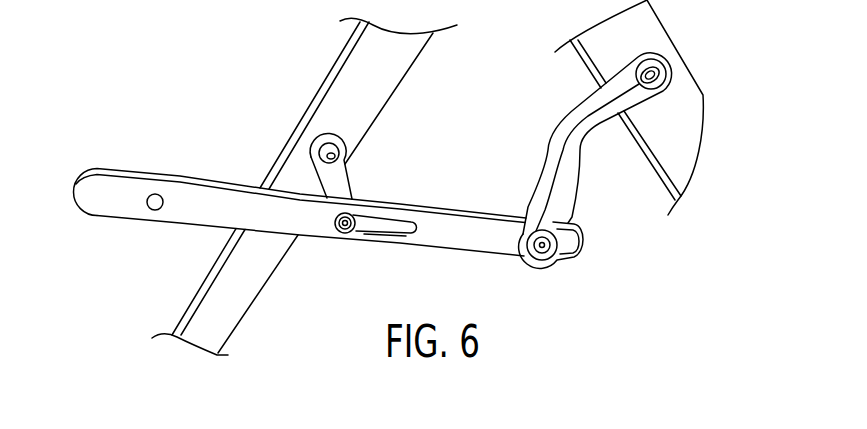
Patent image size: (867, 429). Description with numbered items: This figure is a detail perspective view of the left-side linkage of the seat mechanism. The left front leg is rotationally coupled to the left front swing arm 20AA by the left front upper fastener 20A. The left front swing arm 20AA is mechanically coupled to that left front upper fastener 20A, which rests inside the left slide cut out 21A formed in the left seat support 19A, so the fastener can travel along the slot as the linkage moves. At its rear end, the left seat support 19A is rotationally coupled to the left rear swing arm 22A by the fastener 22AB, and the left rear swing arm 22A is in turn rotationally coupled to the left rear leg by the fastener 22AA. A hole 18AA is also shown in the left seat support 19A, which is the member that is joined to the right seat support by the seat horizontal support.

The pin hole 18AA is at (155, 193).
The left seat support 19A is at (466, 230).
The left front upper fastener 20A is at (328, 150).
The left front swing arm 20AA is at (339, 186).
The left slide cut out 21A is at (407, 233).
The left rear swing arm 22A is at (568, 135).
The fastener 22AA is at (653, 73).
The fastener 22AB is at (542, 246).